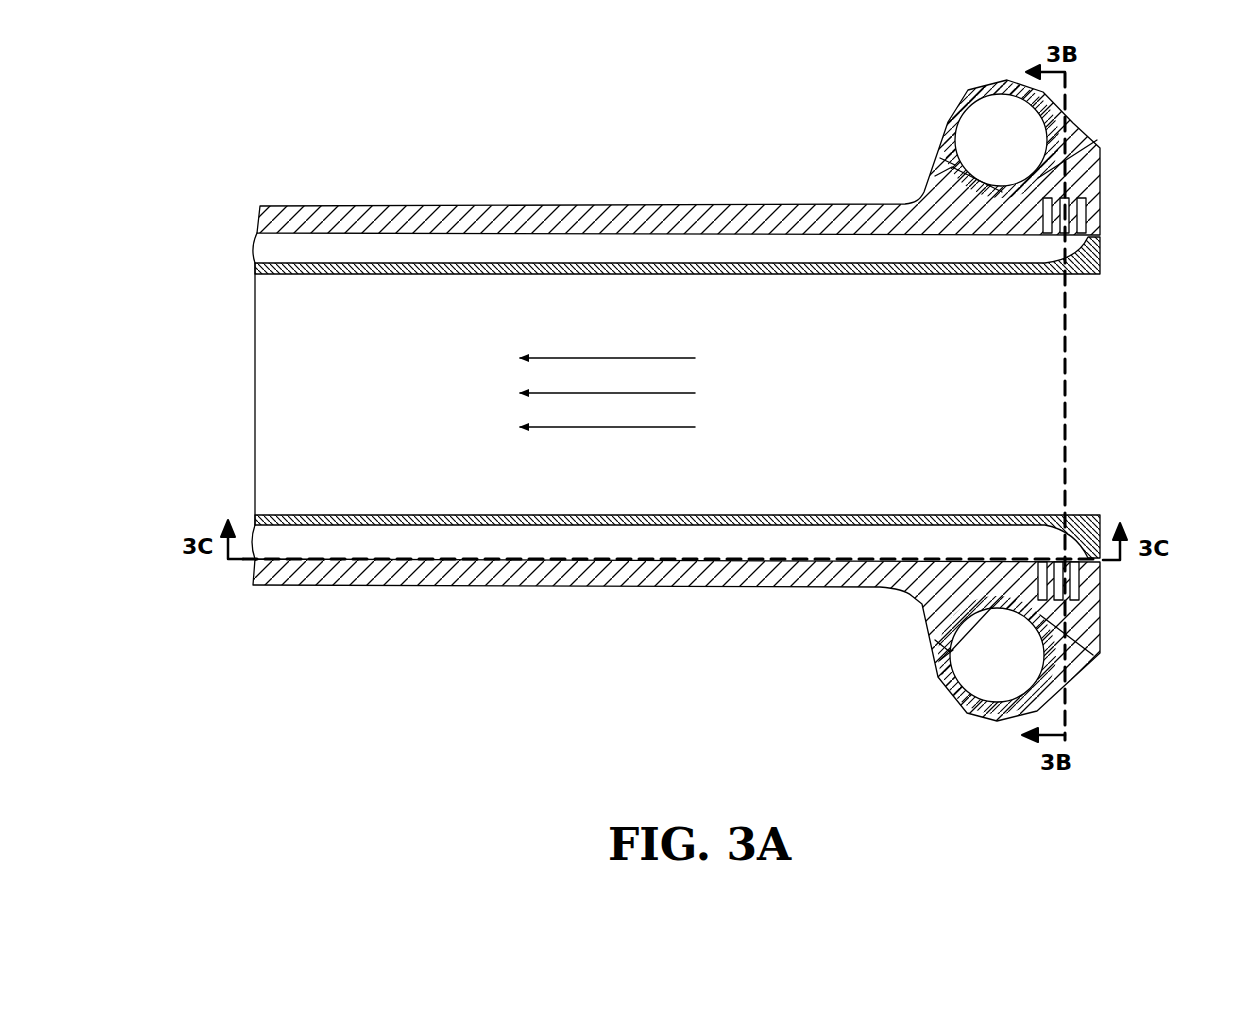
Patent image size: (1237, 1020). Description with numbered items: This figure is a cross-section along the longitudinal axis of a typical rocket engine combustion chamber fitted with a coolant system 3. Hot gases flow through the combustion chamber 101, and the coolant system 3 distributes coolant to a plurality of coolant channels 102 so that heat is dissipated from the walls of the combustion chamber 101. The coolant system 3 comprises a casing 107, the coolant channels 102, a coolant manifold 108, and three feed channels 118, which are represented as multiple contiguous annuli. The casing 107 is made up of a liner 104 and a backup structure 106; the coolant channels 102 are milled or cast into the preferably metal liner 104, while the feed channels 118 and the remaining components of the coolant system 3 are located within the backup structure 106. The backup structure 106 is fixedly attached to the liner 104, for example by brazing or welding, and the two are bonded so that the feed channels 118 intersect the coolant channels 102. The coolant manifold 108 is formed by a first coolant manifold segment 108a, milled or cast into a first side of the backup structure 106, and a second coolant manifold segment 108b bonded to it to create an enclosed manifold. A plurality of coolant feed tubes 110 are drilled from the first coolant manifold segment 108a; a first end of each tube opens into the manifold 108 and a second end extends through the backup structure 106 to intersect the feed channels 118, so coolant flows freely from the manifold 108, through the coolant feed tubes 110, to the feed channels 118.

The coolant system 3 is at (420, 128).
The combustion chamber 101 is at (740, 408).
The coolant channels 102 is at (862, 238).
The liner 104 is at (1095, 248).
The backup structure 106 is at (1095, 222).
The casing 107 is at (1180, 222).
The coolant manifold 108 is at (998, 138).
The first coolant manifold segment 108a is at (953, 165).
The second coolant manifold segment 108b is at (1000, 90).
The coolant feed tubes 110 is at (1040, 190).
The feed channels 118 is at (1082, 217).